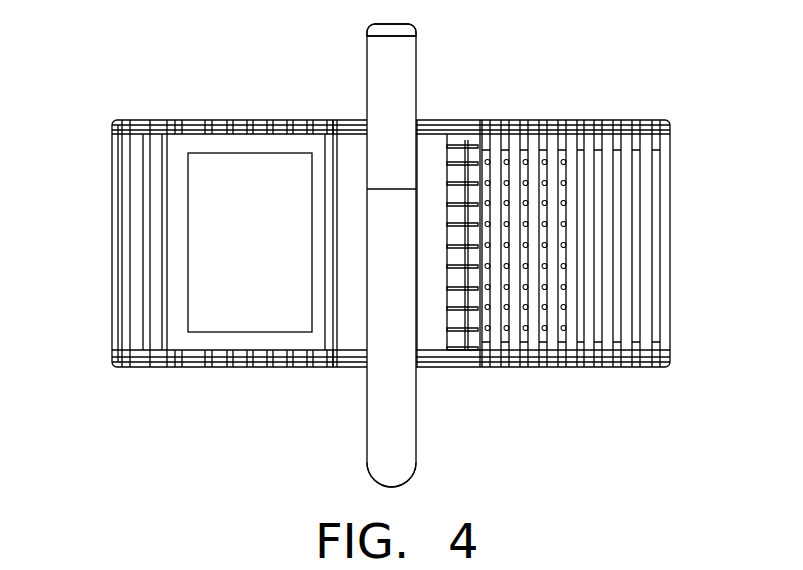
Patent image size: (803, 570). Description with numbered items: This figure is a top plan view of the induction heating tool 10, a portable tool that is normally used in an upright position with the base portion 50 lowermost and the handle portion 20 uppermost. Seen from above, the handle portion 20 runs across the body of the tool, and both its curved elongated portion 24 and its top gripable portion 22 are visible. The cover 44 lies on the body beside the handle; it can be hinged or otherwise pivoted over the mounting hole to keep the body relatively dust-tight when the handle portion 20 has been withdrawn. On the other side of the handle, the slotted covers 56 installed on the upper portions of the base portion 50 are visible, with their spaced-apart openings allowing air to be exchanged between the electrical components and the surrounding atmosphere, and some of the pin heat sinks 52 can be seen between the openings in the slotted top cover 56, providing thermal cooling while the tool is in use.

The induction heating tool 10 is at (368, 246).
The handle portion 20 is at (379, 246).
The top gripable portion 22 is at (417, 44).
The curved elongated portion 24 is at (416, 457).
The cover 44 is at (266, 232).
The base portion 50 is at (382, 282).
The pin heat sinks 52 is at (520, 307).
The covers 56 is at (635, 362).